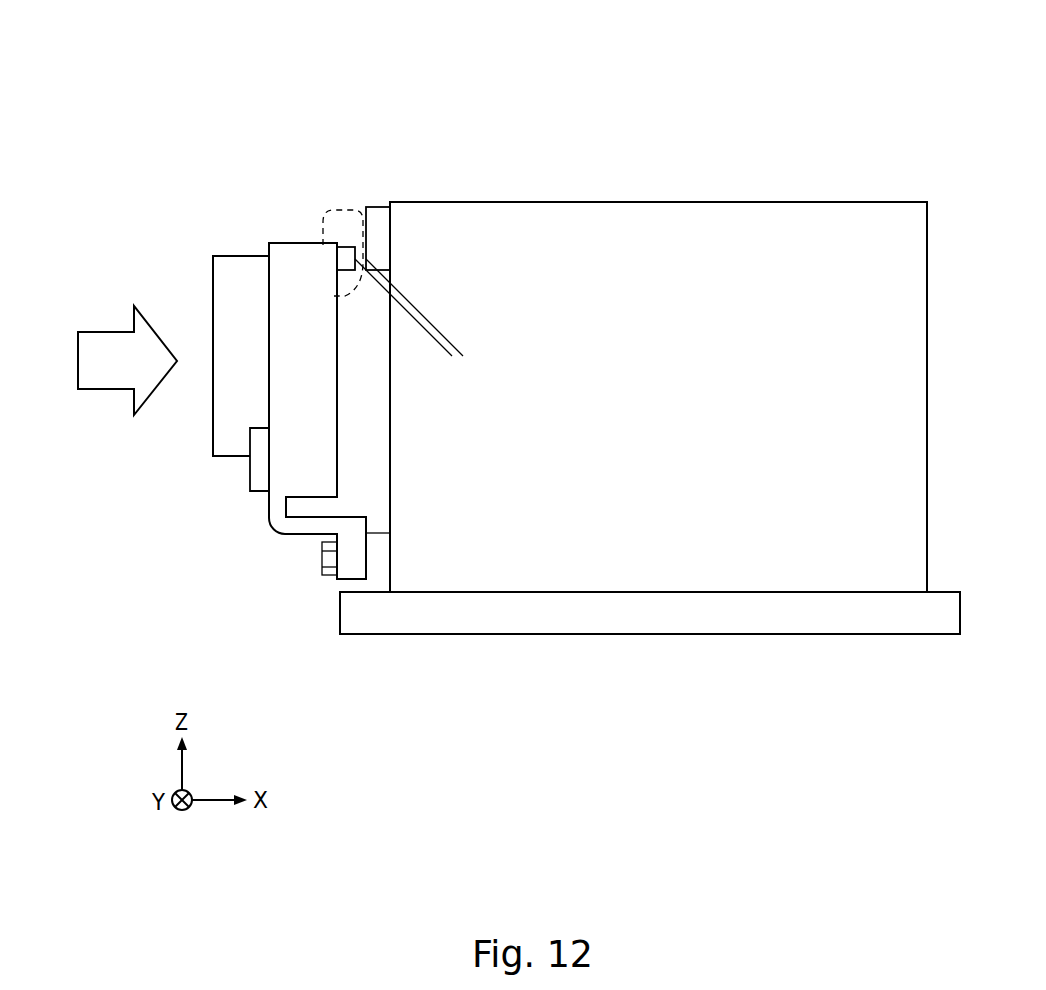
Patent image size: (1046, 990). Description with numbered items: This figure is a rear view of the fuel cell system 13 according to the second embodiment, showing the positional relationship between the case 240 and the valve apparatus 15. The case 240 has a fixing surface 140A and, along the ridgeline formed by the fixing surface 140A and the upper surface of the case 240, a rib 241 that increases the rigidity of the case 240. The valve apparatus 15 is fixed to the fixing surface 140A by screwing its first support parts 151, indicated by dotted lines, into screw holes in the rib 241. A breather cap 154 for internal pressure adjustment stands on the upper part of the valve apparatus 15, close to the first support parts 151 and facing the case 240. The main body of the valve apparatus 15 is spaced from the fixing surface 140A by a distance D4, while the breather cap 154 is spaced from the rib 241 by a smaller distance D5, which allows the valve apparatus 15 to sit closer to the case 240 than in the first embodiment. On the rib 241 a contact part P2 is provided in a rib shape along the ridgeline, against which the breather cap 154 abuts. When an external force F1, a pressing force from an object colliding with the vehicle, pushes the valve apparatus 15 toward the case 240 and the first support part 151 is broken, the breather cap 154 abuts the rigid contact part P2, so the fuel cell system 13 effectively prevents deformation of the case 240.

The fuel cell system 13 is at (267, 299).
The valve apparatus 15 is at (235, 256).
The first support part 151 is at (347, 210).
The breather cap 154 is at (348, 246).
The rib 241 is at (378, 207).
The case 240 is at (516, 201).
The fixing surface 140A is at (362, 378).
The contact part P2 is at (380, 256).
The distance between main body part and case D4 is at (430, 432).
The distance between breather cap and rib D5 is at (402, 350).
The external force F1 is at (109, 360).